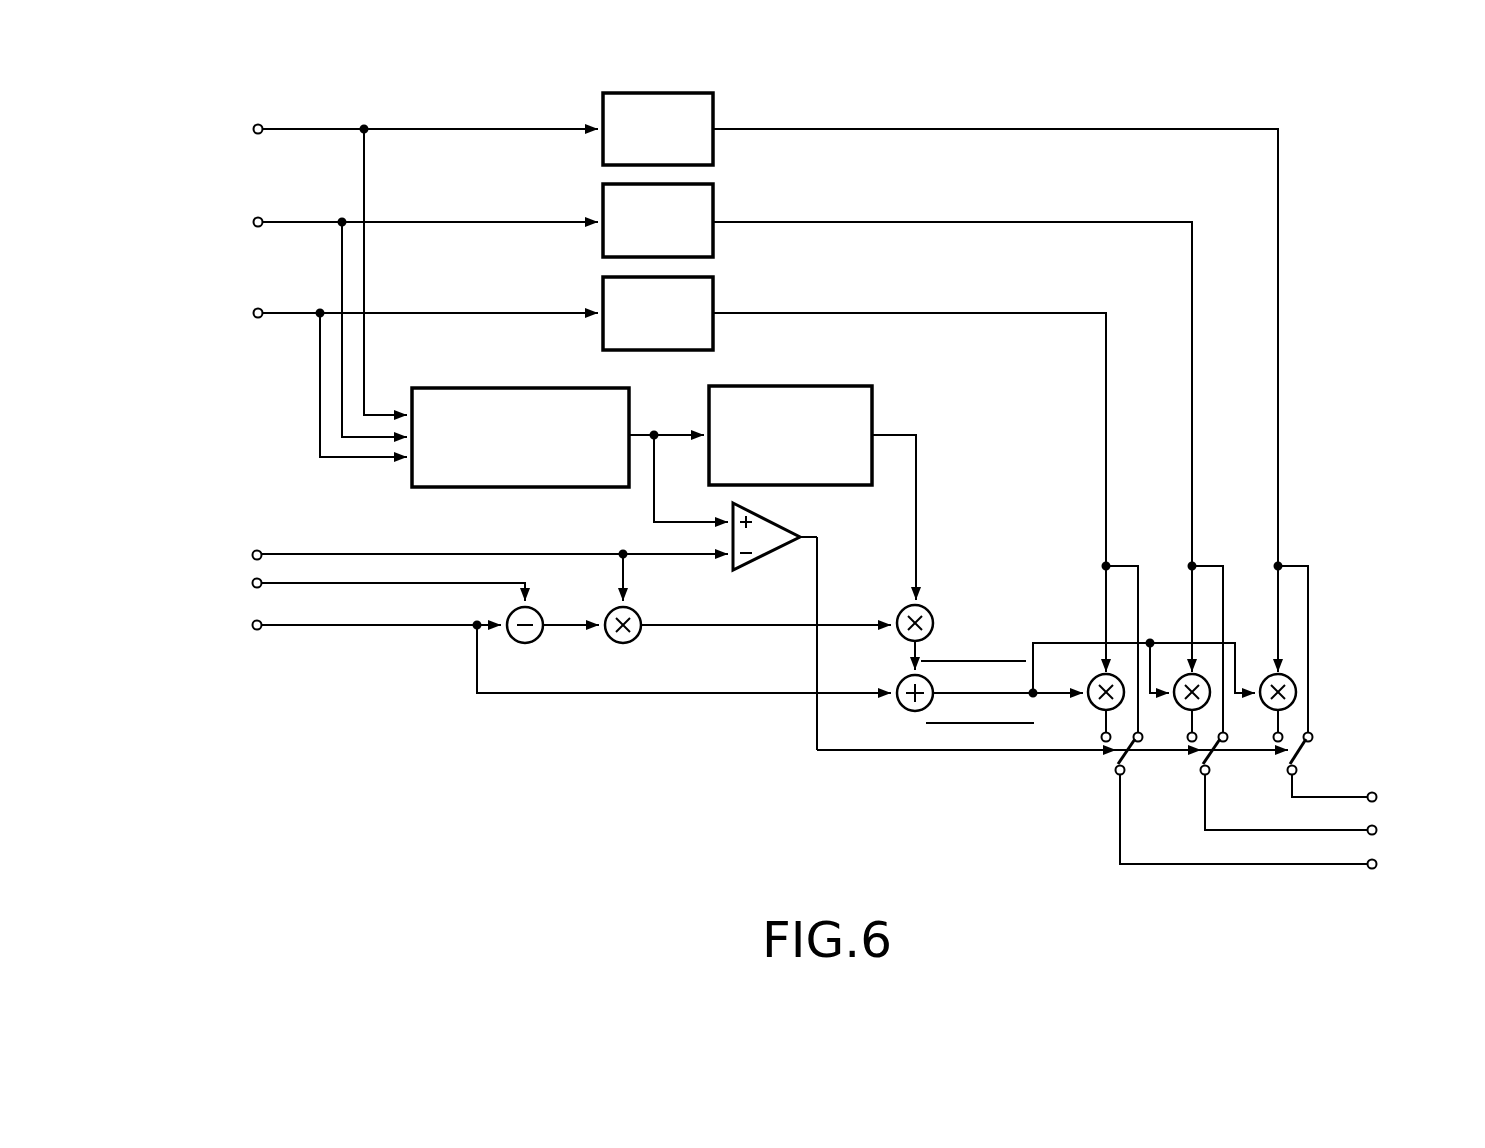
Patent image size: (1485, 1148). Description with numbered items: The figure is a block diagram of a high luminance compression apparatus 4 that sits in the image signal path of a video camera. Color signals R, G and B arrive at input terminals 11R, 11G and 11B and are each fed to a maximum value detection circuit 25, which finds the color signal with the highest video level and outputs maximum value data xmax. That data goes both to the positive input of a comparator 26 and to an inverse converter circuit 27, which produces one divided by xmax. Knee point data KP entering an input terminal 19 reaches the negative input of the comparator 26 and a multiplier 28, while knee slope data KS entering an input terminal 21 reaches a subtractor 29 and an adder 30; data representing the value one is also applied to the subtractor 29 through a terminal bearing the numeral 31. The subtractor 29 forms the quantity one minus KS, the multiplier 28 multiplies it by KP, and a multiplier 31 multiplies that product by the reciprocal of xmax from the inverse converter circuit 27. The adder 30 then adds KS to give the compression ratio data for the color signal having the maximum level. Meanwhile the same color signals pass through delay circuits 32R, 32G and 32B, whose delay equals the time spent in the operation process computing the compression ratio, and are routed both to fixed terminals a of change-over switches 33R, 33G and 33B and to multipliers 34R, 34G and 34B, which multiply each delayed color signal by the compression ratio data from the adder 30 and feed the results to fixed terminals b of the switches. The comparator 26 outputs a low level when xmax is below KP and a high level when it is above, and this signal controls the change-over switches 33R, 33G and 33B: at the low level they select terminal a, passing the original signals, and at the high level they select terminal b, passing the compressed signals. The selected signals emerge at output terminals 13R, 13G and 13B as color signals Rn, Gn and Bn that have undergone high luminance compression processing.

The high luminance compression apparatus 4 is at (810, 863).
The input terminal 11R is at (258, 134).
The input terminal 11G is at (258, 227).
The input terminal 11B is at (258, 318).
The delay circuit 32R is at (713, 105).
The delay circuit 32G is at (713, 196).
The delay circuit 32B is at (713, 289).
The maximum value detection circuit 25 is at (557, 488).
The inverse converter circuit 27 is at (838, 487).
The comparator 26 is at (762, 557).
The input terminal 19 is at (257, 550).
The input terminal 21 is at (257, 630).
The multiplier 31 is at (928, 610).
The subtractor 29 is at (525, 643).
The multiplier 28 is at (628, 643).
The adder 30 is at (905, 710).
The multiplier 34B is at (1091, 681).
The multiplier 34G is at (1180, 672).
The multiplier 34R is at (1265, 672).
The change-over switch 33B is at (1185, 800).
The change-over switch 33G is at (1271, 800).
The change-over switch 33R is at (1360, 782).
The output terminal 13R is at (1374, 792).
The output terminal 13G is at (1377, 827).
The output terminal 13B is at (1366, 869).